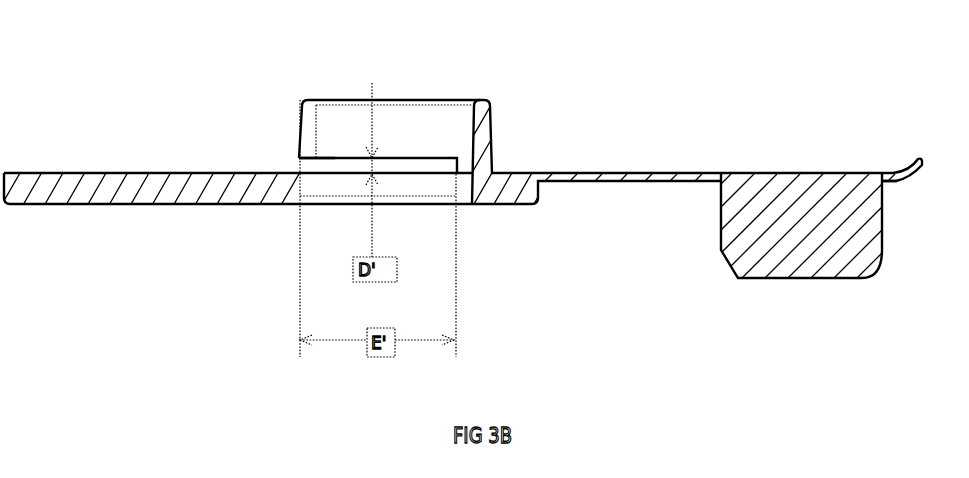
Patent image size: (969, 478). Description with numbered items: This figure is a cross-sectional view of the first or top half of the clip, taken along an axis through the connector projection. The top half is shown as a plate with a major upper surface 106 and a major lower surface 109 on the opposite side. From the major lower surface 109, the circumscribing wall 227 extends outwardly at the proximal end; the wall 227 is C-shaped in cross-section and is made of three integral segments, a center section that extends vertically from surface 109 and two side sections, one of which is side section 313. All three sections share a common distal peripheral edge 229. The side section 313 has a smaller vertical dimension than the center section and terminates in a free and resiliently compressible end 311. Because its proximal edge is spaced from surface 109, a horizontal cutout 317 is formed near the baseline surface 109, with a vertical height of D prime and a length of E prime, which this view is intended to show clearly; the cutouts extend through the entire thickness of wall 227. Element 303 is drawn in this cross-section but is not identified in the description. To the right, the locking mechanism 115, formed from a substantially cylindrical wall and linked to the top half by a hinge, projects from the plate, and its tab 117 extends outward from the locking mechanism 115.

The major upper surface 106 is at (102, 204).
The major lower surface 109 is at (197, 173).
The locking mechanism 115 is at (728, 265).
The tab 117 is at (908, 160).
The wall 227 is at (490, 140).
The distal peripheral edge 229 is at (466, 100).
The wall base 303 is at (330, 157).
The free and resiliently compressible end 311 is at (300, 123).
The side section 313 is at (366, 148).
The horizontal cutout 317 is at (390, 162).